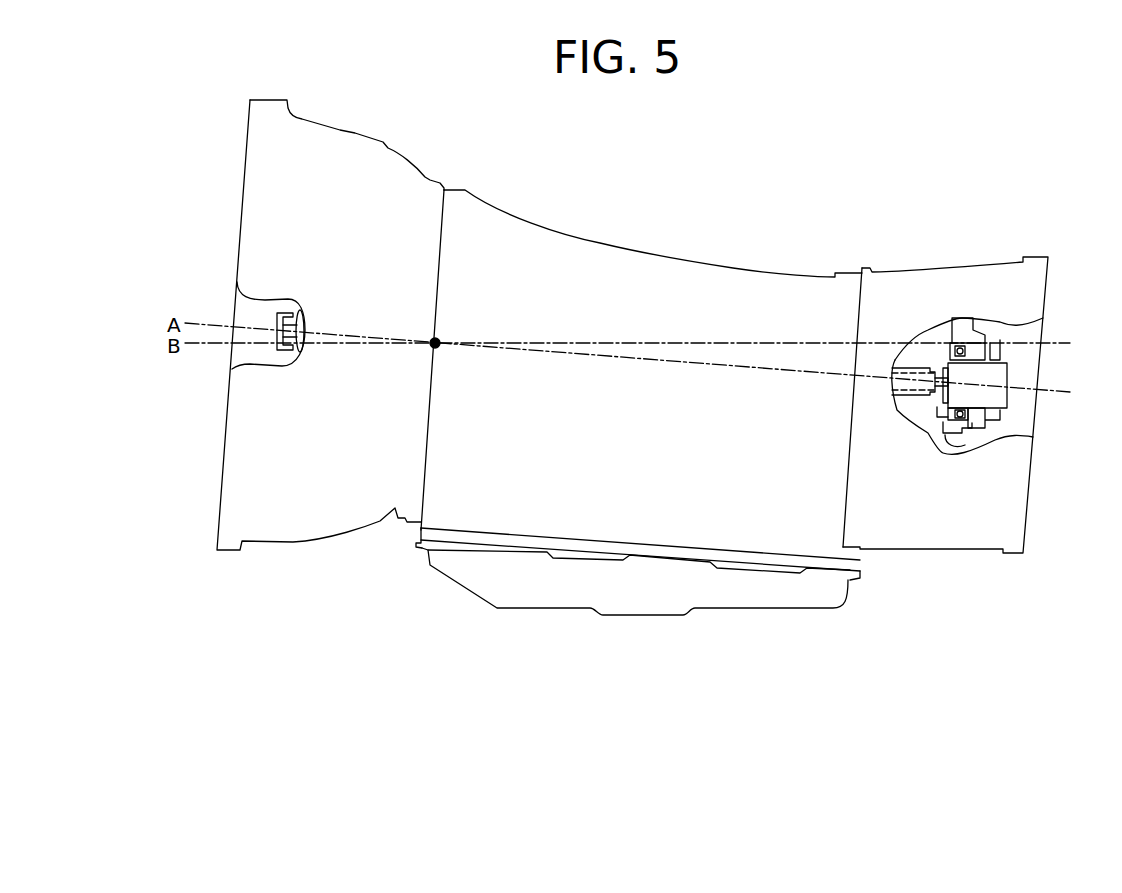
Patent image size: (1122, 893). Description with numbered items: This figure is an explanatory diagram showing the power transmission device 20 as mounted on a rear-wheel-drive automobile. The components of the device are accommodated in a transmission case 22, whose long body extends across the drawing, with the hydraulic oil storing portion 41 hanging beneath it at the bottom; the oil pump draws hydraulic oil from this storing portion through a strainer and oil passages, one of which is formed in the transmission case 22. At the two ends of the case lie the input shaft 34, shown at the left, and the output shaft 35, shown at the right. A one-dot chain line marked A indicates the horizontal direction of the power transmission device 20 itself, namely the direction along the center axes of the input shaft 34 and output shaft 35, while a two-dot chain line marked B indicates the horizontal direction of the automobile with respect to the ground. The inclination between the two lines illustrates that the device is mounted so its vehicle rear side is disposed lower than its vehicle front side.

The power transmission device 20 is at (632, 374).
The transmission case 22 is at (653, 270).
The input shaft 34 is at (302, 308).
The output shaft 35 is at (925, 370).
The hydraulic oil storing portion 41 is at (650, 588).